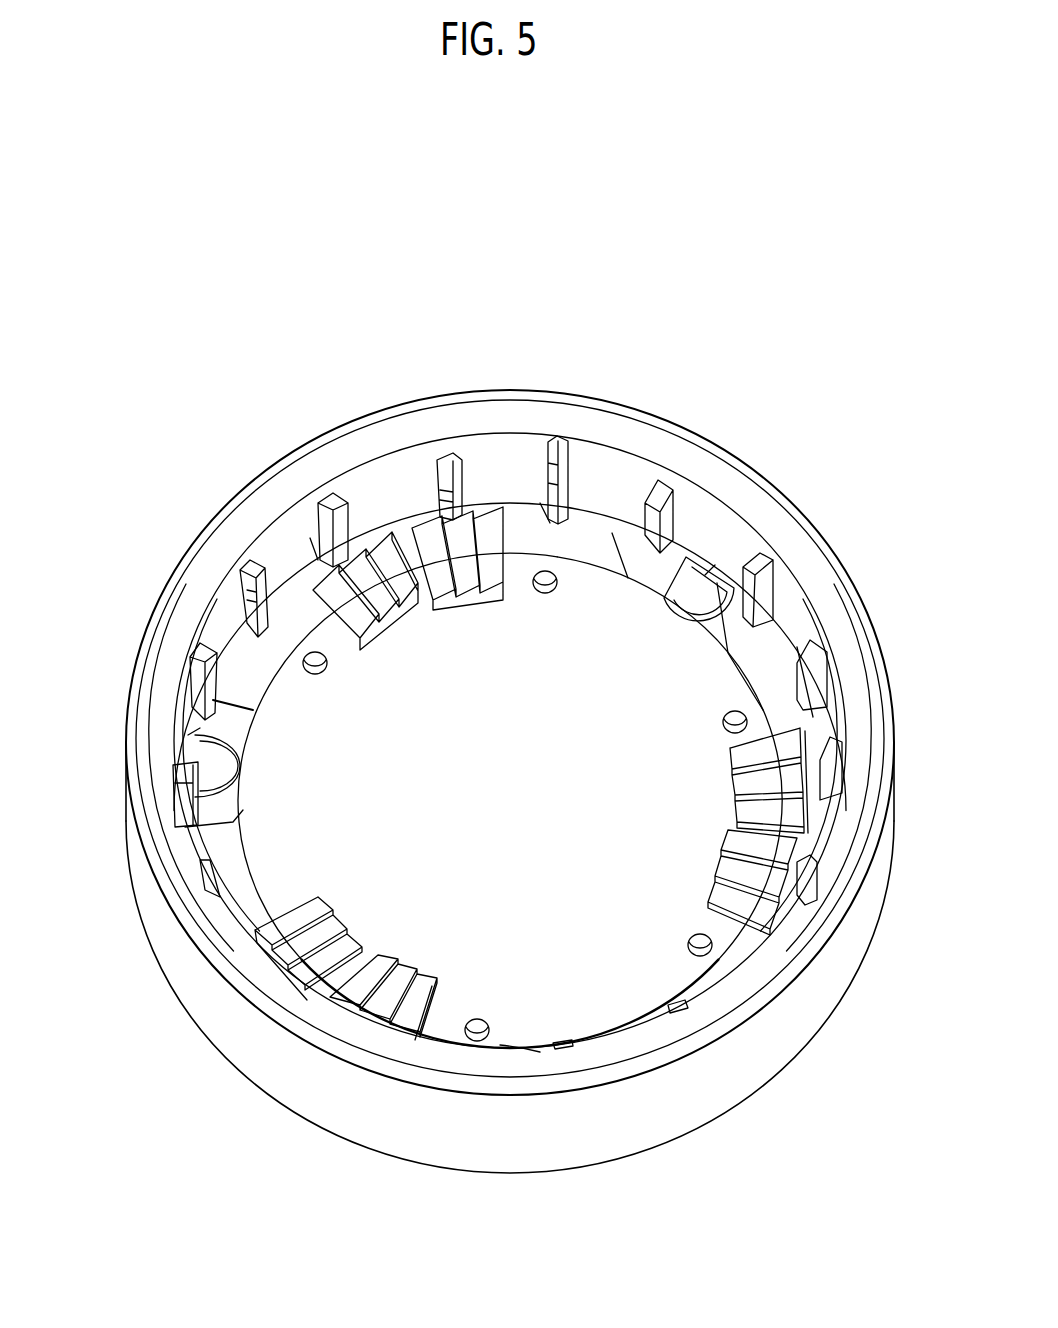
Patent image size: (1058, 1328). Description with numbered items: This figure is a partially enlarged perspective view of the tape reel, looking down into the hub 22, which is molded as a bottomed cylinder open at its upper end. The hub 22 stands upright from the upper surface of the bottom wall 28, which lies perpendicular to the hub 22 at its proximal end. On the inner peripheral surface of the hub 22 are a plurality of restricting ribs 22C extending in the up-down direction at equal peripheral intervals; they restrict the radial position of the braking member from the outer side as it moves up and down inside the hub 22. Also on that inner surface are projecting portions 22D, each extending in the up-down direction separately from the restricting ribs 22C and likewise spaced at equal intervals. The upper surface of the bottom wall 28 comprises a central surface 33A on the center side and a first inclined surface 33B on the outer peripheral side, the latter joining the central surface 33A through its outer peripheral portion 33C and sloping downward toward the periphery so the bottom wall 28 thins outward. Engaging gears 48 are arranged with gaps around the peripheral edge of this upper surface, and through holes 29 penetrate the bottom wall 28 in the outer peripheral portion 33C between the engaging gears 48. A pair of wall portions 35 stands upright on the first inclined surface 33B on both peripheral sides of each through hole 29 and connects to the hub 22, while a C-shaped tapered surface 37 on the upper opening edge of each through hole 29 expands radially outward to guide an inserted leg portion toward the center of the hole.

The hub 22 is at (479, 781).
The restricting rib 22C is at (478, 680).
The projecting portion 22D is at (391, 467).
The bottom wall 28 is at (512, 1133).
The through hole 29 is at (441, 590).
The central surface 33A is at (546, 1091).
The first inclined surface 33B is at (387, 672).
The outer peripheral portion 33C is at (758, 758).
The wall portion 35 is at (553, 698).
The tapered surface 37 is at (464, 679).
The engaging gear 48 is at (546, 755).